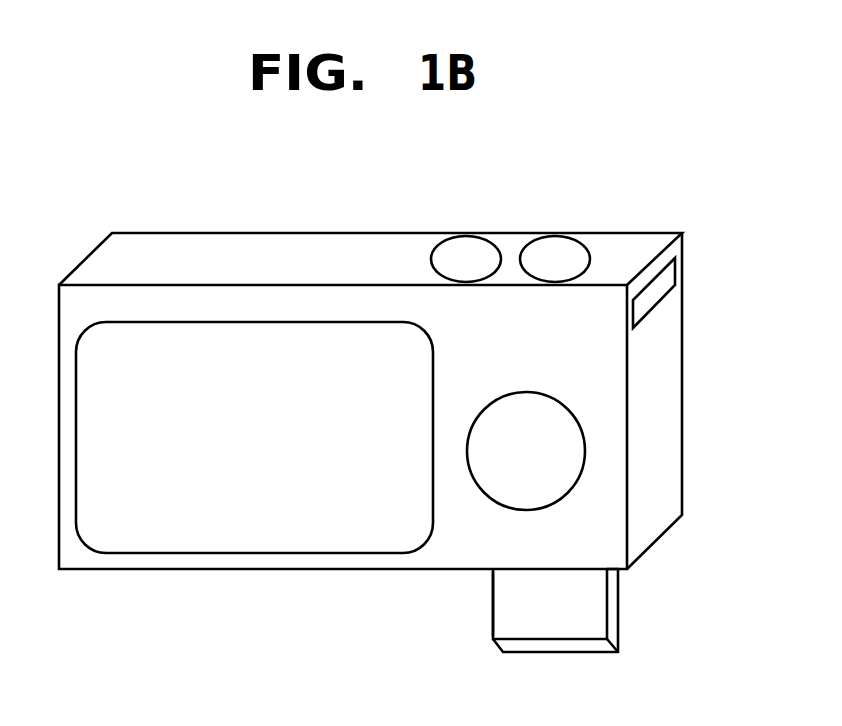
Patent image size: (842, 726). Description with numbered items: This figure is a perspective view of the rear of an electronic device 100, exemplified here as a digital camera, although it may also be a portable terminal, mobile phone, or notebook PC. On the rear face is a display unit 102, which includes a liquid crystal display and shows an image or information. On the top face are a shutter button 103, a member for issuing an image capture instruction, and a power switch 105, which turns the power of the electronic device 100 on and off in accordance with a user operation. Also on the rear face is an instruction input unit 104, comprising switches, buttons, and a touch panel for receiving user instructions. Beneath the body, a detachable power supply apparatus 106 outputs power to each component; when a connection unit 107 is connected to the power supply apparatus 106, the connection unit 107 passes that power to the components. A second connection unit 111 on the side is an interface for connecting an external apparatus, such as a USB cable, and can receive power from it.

The electronic device 100 is at (102, 266).
The display unit 102 is at (370, 338).
The shutter button 103 is at (551, 245).
The instruction input unit 104 is at (585, 436).
The power switch 105 is at (460, 247).
The power supply apparatus 106 is at (618, 617).
The connection unit 107 is at (533, 571).
The second connection unit 111 is at (670, 279).